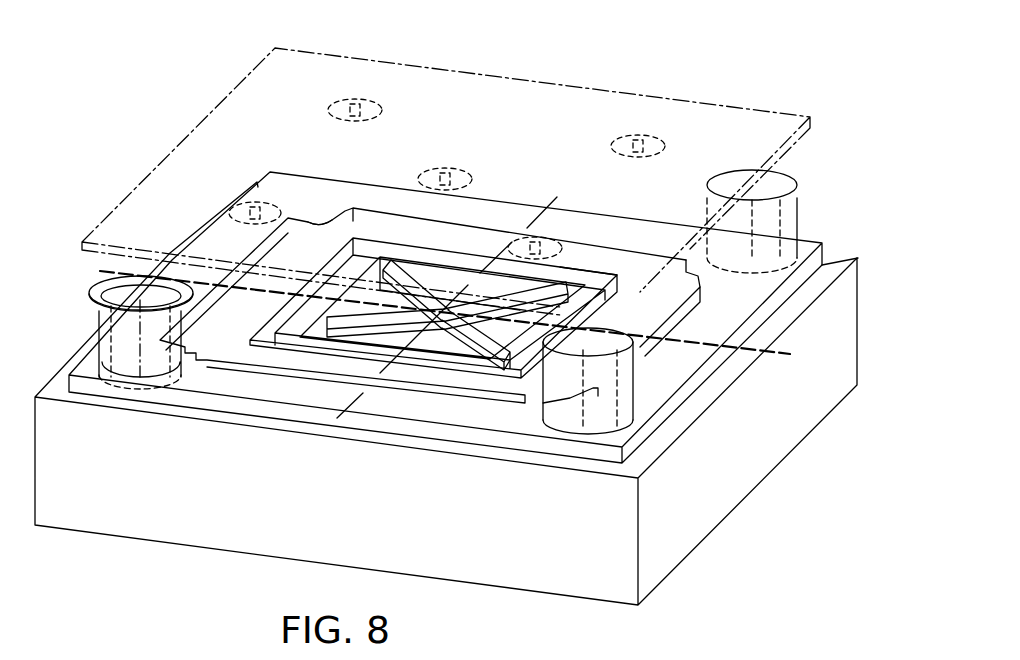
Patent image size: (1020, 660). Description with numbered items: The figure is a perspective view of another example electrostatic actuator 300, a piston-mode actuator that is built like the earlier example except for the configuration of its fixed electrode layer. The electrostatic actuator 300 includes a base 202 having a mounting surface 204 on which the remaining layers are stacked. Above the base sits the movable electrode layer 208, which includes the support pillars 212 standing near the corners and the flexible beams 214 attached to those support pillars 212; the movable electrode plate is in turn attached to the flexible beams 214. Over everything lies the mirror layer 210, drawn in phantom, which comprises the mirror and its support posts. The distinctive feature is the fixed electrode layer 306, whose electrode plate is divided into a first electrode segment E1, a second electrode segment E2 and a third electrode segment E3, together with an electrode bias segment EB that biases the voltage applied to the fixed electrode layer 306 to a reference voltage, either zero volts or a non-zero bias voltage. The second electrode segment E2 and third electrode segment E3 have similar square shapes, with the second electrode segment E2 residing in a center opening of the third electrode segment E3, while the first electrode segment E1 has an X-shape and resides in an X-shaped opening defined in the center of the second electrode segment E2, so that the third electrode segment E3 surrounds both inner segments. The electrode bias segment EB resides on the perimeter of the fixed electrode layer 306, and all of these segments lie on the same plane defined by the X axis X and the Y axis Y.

The electrostatic actuator 300 is at (159, 61).
The base 202 is at (748, 495).
The mounting surface 204 is at (690, 412).
The movable electrode layer 208 is at (84, 266).
The mirror layer 210 is at (826, 122).
The support pillars 212 is at (97, 332).
The flexible beams 214 is at (258, 304).
The fixed electrode layer 306 is at (840, 240).
The first electrode segment E1 is at (428, 266).
The second electrode segment E2 is at (595, 266).
The third electrode segment E3 is at (330, 212).
The electrode bias segment EB is at (810, 236).
The X axis X is at (456, 319).
The Y axis Y is at (450, 294).